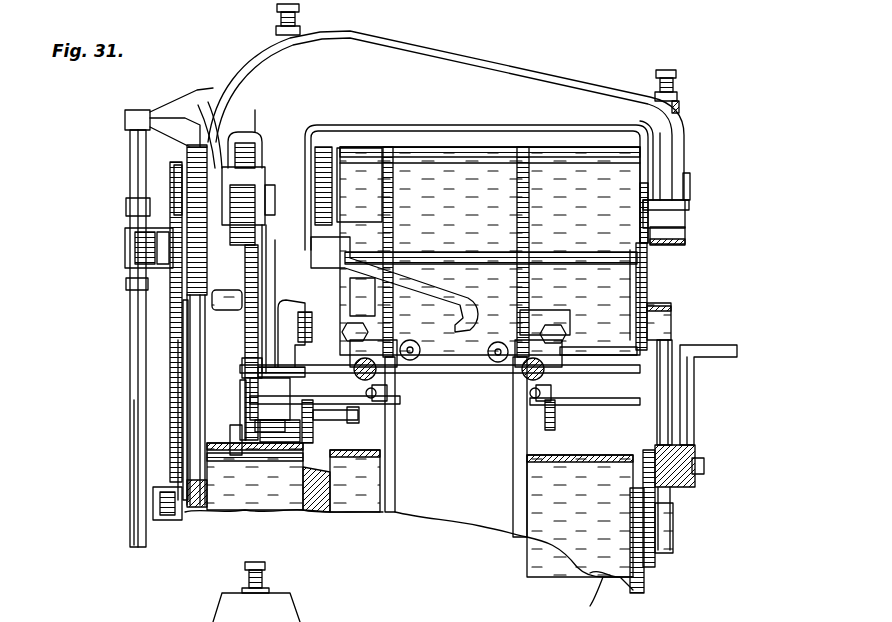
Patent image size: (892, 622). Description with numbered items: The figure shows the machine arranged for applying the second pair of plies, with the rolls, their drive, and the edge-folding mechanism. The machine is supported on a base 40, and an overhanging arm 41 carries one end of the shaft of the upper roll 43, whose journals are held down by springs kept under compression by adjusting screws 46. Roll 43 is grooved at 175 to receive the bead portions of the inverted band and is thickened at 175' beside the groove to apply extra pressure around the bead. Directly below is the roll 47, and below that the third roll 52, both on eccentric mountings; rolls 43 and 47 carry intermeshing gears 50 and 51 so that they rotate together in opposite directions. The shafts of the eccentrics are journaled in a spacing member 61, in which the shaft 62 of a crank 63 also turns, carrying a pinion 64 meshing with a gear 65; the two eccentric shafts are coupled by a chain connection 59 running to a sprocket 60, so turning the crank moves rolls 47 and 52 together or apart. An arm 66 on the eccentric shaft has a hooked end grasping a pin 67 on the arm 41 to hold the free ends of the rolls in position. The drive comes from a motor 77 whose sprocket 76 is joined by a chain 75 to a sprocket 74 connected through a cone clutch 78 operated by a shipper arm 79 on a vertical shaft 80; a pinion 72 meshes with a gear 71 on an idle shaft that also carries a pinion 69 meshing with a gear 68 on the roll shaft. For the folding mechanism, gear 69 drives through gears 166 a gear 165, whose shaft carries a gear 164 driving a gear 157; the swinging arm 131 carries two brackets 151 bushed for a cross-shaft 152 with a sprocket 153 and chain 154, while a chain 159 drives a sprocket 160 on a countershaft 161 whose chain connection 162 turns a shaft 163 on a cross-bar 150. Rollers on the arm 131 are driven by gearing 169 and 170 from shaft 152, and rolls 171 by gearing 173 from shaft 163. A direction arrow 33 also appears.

The overhanging arm 41 is at (556, 85).
The adjusting screws 46 is at (300, 20).
The roll 43 is at (459, 152).
The groove 175 is at (548, 333).
The thickening of the roll 175' is at (472, 302).
The gear 50 is at (330, 150).
The vertical shaft 80 is at (130, 348).
The chain 75 is at (175, 412).
The shipper arm 79 is at (128, 215).
The clutch 78 is at (150, 243).
The pinion 72 is at (178, 260).
The gear 71 is at (212, 138).
The pinion 69 is at (232, 150).
The gear 164 is at (212, 325).
The sprocket 74 is at (185, 182).
The gear 68 is at (262, 152).
The gears 166 is at (265, 165).
The gear 165 is at (272, 228).
The gear 157 is at (272, 238).
The direction arrow 33 is at (247, 126).
The arm 131 is at (394, 284).
The brackets 151 is at (372, 316).
The gearing 170 is at (492, 357).
The gearing 169 is at (392, 345).
The rolls 171 is at (372, 380).
The cross-shaft 152 is at (448, 375).
The gear 51 is at (295, 333).
The base 40 is at (274, 399).
The shaft 163 is at (400, 400).
The chain connection 162 is at (352, 420).
The countershaft 161 is at (300, 442).
The gearing 173 is at (564, 428).
The cross-bar 150 is at (618, 405).
The sprocket 60 is at (200, 330).
The chain 154 is at (214, 400).
The chain connection 59 is at (195, 382).
The sprocket 153 is at (229, 410).
The chain 159 is at (252, 420).
The motor 77 is at (250, 500).
The sprocket 160 is at (258, 442).
The sprocket 76 is at (165, 520).
The pin 67 is at (688, 243).
The arm 66 is at (650, 263).
The roll 47 is at (640, 280).
The spacing member 61 is at (665, 352).
The crank 63 is at (697, 395).
The pinion 64 is at (645, 452).
The shaft 62 is at (690, 488).
The gear 65 is at (655, 565).
The third roll 52 is at (580, 538).